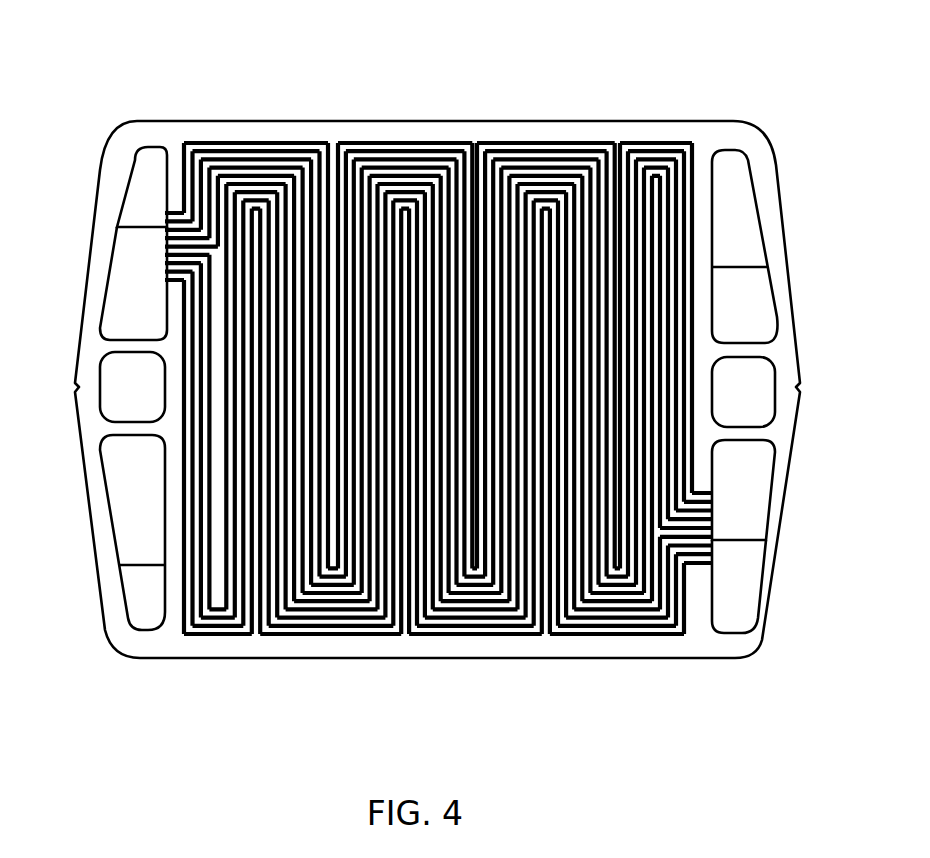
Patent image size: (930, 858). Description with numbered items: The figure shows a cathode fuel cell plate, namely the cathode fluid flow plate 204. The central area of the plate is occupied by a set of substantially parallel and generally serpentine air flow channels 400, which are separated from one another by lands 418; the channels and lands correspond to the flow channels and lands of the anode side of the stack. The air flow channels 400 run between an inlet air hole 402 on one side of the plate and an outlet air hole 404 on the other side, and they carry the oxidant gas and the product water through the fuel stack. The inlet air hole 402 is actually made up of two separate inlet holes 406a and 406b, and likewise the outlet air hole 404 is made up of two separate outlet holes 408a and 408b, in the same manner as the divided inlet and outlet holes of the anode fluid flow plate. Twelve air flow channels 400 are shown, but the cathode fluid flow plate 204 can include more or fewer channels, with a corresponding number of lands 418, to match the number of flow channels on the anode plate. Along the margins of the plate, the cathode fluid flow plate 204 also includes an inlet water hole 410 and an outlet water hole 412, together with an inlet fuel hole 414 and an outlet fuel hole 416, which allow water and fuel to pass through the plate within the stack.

The cathode fluid flow plate 204 is at (483, 94).
The air flow channels 400 is at (438, 355).
The lands 418 is at (300, 172).
The inlet air hole 402 is at (110, 240).
The outlet air hole 404 is at (765, 525).
The separate inlet hole 406a is at (153, 192).
The separate inlet hole 406b is at (117, 292).
The inlet water hole 410 is at (98, 398).
The inlet fuel hole 414 is at (112, 546).
The outlet fuel hole 416 is at (765, 254).
The outlet water hole 412 is at (773, 368).
The separate outlet hole 408a is at (757, 490).
The separate outlet hole 408b is at (733, 568).